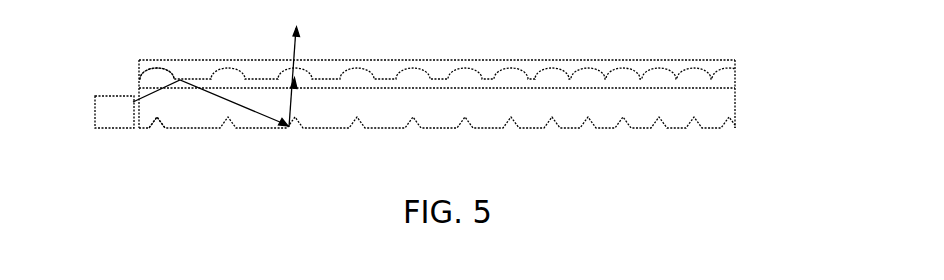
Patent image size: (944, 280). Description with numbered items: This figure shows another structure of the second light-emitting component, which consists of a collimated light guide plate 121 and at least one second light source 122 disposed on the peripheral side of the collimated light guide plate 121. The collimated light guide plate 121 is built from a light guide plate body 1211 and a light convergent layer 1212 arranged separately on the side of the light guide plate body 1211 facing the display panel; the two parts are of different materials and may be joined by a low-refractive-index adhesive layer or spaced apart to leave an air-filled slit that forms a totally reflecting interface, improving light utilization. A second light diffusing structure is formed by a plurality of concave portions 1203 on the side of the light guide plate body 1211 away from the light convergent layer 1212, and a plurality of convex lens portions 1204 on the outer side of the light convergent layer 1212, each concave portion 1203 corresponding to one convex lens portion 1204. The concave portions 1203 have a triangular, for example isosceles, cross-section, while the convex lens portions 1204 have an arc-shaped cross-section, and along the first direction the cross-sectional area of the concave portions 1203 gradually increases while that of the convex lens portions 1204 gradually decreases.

The collimated light guide plate 121 is at (509, 98).
The light guide plate body 1211 is at (481, 124).
The light convergent layer 1212 is at (481, 58).
The concave portions 1203 is at (158, 132).
The convex lens portions 1204 is at (158, 73).
The second light source 122 is at (108, 102).